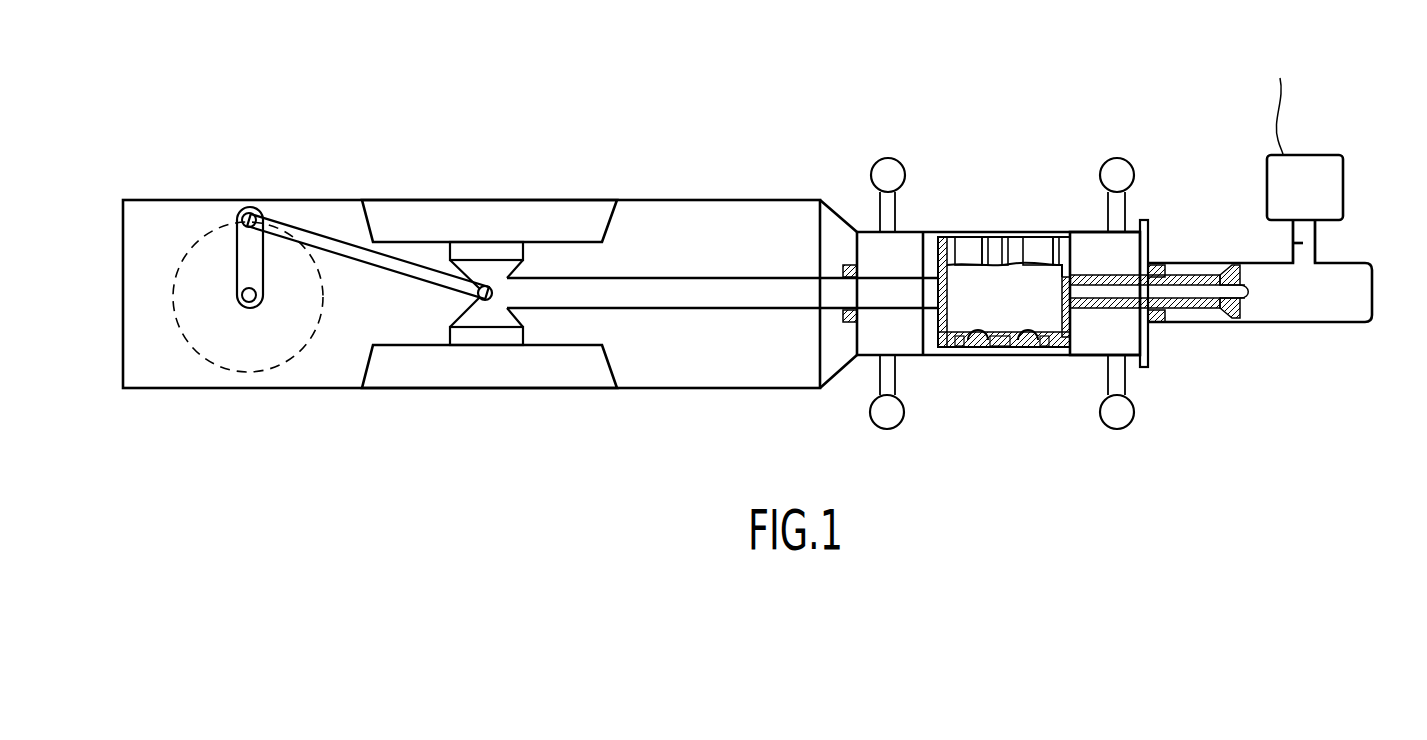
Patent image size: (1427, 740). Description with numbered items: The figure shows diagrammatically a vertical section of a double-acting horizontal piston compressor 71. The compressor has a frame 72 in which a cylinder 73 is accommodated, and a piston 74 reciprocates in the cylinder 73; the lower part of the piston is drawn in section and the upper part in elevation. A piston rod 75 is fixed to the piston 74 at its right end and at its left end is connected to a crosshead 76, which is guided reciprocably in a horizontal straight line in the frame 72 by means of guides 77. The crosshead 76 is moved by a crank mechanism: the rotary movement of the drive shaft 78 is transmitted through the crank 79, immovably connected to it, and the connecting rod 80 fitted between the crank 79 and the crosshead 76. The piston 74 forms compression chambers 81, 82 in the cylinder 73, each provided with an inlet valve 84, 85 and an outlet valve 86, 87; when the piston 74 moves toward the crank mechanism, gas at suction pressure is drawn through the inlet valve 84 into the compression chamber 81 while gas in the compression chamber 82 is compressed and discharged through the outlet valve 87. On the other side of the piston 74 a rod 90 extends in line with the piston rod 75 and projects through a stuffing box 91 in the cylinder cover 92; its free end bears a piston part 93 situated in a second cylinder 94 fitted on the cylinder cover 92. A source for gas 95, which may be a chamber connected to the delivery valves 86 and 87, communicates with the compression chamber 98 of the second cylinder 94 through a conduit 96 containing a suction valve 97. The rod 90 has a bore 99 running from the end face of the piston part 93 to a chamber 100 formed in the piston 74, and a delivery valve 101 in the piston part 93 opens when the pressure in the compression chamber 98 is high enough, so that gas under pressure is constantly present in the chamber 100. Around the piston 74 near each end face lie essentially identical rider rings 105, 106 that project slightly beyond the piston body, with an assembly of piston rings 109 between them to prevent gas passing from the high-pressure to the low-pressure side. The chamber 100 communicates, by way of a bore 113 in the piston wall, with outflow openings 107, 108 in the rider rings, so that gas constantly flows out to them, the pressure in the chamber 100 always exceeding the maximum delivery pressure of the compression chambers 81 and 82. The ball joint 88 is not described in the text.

The horizontal piston compressor 71 is at (771, 135).
The frame 72 is at (666, 200).
The cylinder 73 is at (855, 365).
The piston 74 is at (938, 358).
The piston rod 75 is at (753, 293).
The crosshead 76 is at (477, 245).
The guides 77 is at (540, 363).
The drive shaft 78 is at (248, 302).
The crank 79 is at (235, 248).
The connecting rod 80 is at (333, 230).
The compression chamber 81 is at (1105, 293).
The compression chamber 82 is at (883, 293).
The inlet valve 84 is at (1117, 158).
The inlet valve 85 is at (872, 178).
The outlet valve 86 is at (1117, 430).
The outlet valve 87 is at (887, 430).
The ball joint 88 is at (478, 296).
The rod 90 is at (1190, 278).
The stuffing box 91 is at (1151, 262).
The cylinder cover 92 is at (1158, 358).
The piston part 93 is at (1227, 260).
The second cylinder 94 is at (1330, 322).
The source for gas 95 is at (1315, 155).
The conduit 96 is at (1318, 232).
The suction valve 97 is at (1318, 248).
The compression chamber 98 is at (1300, 292).
The bore 99 is at (1200, 323).
The chamber 100 is at (1004, 292).
The delivery valve 101 is at (1250, 302).
The rider ring 105 is at (960, 232).
The rider ring 106 is at (1040, 232).
The outflow opening 107 is at (968, 358).
The outflow opening 108 is at (1037, 358).
The assembly of piston rings 109 is at (1000, 232).
The bore 113 is at (983, 358).